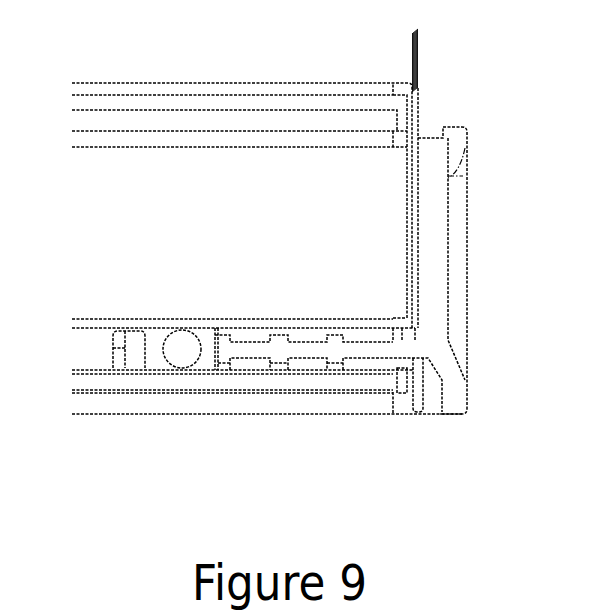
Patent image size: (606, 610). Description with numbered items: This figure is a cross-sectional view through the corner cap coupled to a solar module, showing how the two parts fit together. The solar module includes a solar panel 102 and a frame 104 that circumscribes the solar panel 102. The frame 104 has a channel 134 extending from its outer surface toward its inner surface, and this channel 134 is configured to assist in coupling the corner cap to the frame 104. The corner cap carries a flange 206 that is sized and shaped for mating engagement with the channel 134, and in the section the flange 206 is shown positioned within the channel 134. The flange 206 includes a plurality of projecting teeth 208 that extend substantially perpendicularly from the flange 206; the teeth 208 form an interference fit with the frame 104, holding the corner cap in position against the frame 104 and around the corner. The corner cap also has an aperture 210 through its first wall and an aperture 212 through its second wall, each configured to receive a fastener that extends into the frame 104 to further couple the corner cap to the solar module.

The solar panel 102 is at (322, 170).
The frame 104 is at (414, 100).
The channel 134 is at (95, 353).
The flange 206 is at (360, 350).
The teeth 208 is at (333, 335).
The aperture 210 is at (468, 203).
The aperture 212 is at (180, 358).